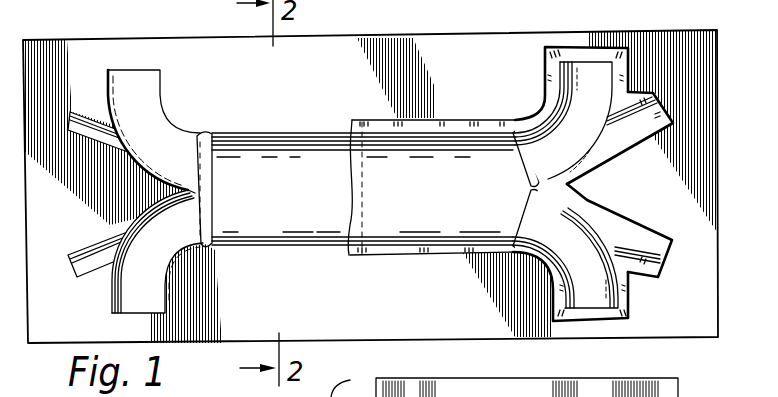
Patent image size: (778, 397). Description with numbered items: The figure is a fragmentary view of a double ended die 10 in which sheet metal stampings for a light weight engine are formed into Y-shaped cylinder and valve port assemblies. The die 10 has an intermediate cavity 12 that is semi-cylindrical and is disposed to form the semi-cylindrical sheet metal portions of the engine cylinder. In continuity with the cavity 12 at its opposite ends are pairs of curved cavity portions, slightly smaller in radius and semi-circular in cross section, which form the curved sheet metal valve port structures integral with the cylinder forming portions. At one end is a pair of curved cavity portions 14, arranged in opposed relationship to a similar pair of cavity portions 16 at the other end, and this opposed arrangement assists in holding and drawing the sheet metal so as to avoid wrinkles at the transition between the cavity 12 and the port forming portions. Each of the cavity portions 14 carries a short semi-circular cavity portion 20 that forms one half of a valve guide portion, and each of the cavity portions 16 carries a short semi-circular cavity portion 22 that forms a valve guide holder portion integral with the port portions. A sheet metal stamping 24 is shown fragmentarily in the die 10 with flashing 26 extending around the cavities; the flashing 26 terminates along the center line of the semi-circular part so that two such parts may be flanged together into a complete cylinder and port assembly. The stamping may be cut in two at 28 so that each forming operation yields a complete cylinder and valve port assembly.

The die 10 is at (472, 45).
The intermediate cavity 12 is at (294, 167).
The curved cavity portions 14 is at (158, 112).
The curved cavity portions 16 is at (540, 104).
The short semi-circular cavity portion 20 is at (99, 118).
The short semi-circular cavity portion 22 is at (620, 150).
The sheet metal stamping 24 is at (375, 220).
The flashing 26 is at (452, 258).
The cut line 28 is at (363, 190).